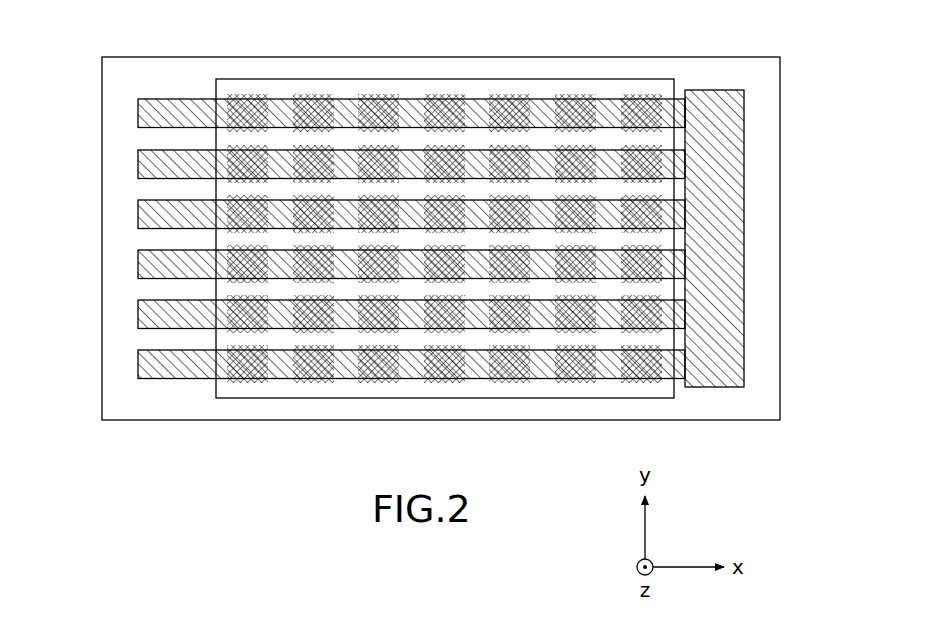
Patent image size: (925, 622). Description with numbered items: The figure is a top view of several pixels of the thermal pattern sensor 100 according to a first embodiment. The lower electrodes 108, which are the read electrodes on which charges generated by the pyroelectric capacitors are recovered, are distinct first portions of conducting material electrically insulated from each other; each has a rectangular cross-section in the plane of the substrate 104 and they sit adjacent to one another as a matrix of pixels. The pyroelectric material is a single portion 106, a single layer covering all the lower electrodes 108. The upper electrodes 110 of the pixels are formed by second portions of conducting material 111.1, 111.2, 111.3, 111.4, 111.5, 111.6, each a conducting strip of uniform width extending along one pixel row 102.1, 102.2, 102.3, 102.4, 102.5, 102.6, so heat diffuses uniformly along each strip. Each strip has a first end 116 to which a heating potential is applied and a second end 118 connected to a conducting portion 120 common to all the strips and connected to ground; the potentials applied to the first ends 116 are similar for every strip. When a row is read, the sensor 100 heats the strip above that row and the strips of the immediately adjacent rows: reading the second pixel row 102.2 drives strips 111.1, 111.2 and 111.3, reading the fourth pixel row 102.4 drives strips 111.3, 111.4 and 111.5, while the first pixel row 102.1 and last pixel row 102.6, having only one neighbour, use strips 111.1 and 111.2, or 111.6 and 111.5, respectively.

The thermal pattern sensor 100 is at (485, 244).
The first pixel row 102.1 is at (354, 74).
The second pixel row 102.2 is at (354, 150).
The third pixel row 102.3 is at (354, 211).
The fourth pixel row 102.4 is at (354, 272).
The fifth pixel row 102.5 is at (354, 331).
The last pixel row 102.6 is at (354, 409).
The substrate 104 is at (267, 412).
The single portion of pyroelectric material 106 is at (650, 79).
The lower electrodes 108 is at (433, 202).
The upper electrodes 110 is at (235, 92).
The second portion of conducting material 111.1 is at (364, 74).
The second portion of conducting material 111.2 is at (140, 169).
The second portion of conducting material 111.3 is at (140, 222).
The second portion of conducting material 111.4 is at (140, 270).
The second portion of conducting material 111.5 is at (140, 327).
The second portion of conducting material 111.6 is at (190, 358).
The first end 116 is at (140, 122).
The second end 118 is at (686, 115).
The conducting portion 120 is at (732, 177).